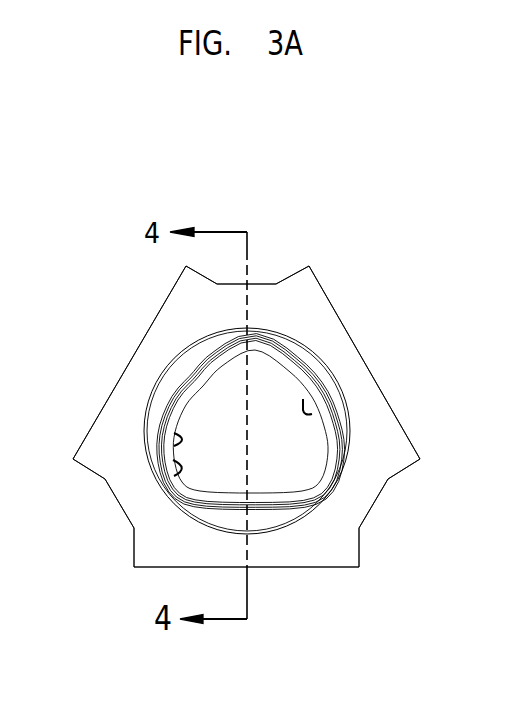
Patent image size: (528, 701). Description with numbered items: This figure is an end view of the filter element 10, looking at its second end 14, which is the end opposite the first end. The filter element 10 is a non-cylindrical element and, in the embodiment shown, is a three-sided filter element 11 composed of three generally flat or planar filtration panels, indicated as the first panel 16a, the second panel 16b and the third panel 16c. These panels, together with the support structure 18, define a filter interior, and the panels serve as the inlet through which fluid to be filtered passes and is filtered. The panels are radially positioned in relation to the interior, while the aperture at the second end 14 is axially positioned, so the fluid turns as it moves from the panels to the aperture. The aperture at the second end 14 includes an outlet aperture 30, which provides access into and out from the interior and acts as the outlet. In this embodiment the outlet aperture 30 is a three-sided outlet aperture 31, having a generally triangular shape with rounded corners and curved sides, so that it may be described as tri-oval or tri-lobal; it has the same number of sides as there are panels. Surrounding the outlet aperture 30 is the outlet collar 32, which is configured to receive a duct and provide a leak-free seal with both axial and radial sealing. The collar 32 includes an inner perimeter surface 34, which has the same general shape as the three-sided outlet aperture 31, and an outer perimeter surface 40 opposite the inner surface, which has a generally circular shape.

The filter element 10 is at (362, 288).
The three-sided filter element 11 is at (385, 317).
The second end 14 is at (357, 500).
The first panel 16a is at (387, 404).
The second panel 16b is at (121, 376).
The third panel 16c is at (163, 567).
The support structure 18 is at (263, 282).
The outlet aperture 30 is at (174, 476).
The three-sided outlet aperture 31 is at (176, 442).
The outlet collar 32 is at (168, 349).
The inner perimeter surface 34 is at (312, 414).
The outer perimeter surface 40 is at (320, 361).